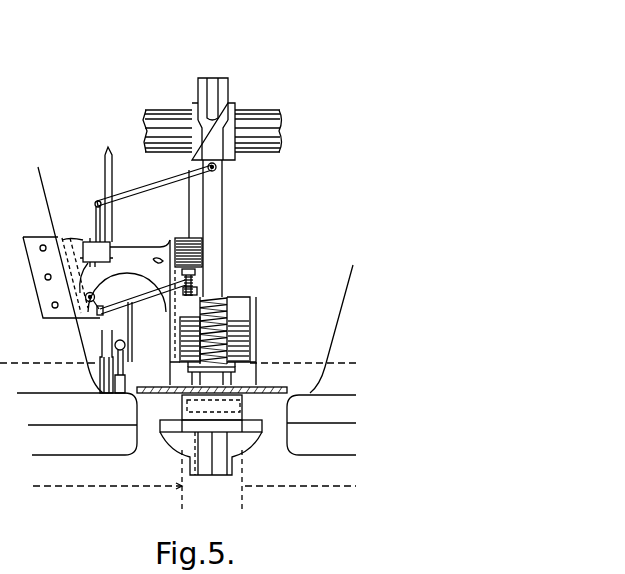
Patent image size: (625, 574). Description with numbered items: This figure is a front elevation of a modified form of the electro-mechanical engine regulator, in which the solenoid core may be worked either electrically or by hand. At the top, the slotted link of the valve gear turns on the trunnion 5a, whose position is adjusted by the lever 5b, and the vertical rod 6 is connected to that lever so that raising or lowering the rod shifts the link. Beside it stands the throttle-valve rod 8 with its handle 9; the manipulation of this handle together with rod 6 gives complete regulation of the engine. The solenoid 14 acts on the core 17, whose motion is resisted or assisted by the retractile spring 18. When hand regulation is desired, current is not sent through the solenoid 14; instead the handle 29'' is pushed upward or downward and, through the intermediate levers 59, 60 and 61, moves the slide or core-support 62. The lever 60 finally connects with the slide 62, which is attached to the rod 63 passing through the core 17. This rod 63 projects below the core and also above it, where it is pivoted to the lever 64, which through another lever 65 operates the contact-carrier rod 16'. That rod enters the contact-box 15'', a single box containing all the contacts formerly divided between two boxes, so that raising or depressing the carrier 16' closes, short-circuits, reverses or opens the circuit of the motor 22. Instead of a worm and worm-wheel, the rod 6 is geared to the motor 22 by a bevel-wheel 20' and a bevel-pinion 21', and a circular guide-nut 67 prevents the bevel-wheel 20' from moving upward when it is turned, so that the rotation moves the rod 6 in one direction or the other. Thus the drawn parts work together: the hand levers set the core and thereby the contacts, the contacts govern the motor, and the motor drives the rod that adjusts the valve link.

The trunnion 5a is at (282, 116).
The lever 5b is at (215, 80).
The rod 6 is at (214, 200).
The throttle-valve rod 8 is at (105, 178).
The handle 9 is at (70, 280).
The solenoid 14 is at (203, 243).
The contact-box 15'' is at (117, 247).
The rod (contact-carrier) 16' is at (75, 229).
The core 17 is at (196, 273).
The retractile spring 18 is at (194, 283).
The bevel-wheel 20' is at (231, 369).
The bevel-pinion 21' is at (246, 361).
The motor 22 is at (240, 308).
The handle 29'' is at (138, 364).
The lever 59 is at (133, 328).
The lever 60 is at (142, 300).
The lever 61 is at (95, 297).
The slide (core-support) 62 is at (198, 291).
The rod 63 is at (188, 206).
The lever 64 is at (142, 188).
The lever 65 is at (95, 212).
The circular guide-nut 67 is at (243, 404).